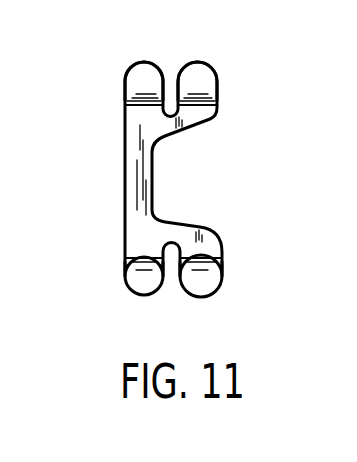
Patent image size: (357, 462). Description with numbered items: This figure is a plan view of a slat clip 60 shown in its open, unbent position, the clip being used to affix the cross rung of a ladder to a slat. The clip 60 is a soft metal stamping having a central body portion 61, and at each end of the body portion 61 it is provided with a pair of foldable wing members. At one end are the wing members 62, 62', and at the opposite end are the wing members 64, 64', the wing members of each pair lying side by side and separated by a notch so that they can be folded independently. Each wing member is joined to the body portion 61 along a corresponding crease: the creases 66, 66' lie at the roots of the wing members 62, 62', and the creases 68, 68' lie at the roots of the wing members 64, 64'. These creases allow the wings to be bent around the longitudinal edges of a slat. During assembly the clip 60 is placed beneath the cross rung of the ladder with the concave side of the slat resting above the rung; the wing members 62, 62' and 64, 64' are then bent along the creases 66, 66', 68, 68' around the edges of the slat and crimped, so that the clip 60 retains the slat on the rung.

The slat clip 60 is at (157, 176).
The body portion 61 is at (137, 155).
The foldable wing member 62 is at (118, 83).
The foldable wing member 62' is at (224, 74).
The crease 66 is at (117, 122).
The crease 66' is at (231, 117).
The crease 68 is at (114, 280).
The crease 68' is at (231, 263).
The foldable wing member 64 is at (130, 301).
The foldable wing member 64' is at (216, 289).